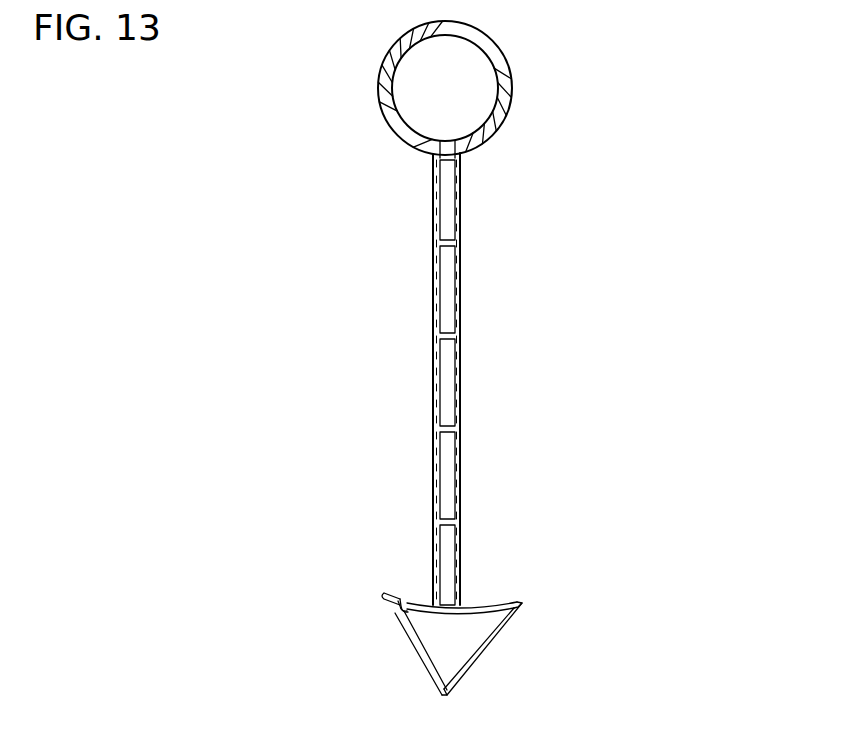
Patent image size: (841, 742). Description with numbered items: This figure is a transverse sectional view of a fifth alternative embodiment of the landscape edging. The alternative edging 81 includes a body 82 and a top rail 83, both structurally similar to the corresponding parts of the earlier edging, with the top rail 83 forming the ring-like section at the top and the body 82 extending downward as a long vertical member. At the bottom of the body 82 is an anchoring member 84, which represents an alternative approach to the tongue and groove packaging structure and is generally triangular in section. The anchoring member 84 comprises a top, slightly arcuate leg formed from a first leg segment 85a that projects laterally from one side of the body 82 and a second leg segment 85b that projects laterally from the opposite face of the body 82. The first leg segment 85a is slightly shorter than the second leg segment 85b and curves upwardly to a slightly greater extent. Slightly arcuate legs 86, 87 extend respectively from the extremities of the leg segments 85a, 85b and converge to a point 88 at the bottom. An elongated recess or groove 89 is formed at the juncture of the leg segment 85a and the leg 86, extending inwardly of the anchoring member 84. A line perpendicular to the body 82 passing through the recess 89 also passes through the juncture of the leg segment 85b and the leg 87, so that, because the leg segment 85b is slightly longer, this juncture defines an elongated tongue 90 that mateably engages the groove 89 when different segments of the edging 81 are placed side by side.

The alternative edging 81 is at (467, 376).
The body 82 is at (405, 297).
The top rail 83 is at (500, 40).
The anchoring member 84 is at (461, 630).
The first leg segment 85a is at (406, 597).
The second leg segment 85b is at (473, 608).
The leg 86 is at (418, 655).
The leg 87 is at (480, 654).
The point 88 is at (443, 698).
The recess or groove 89 is at (395, 606).
The tongue 90 is at (512, 603).